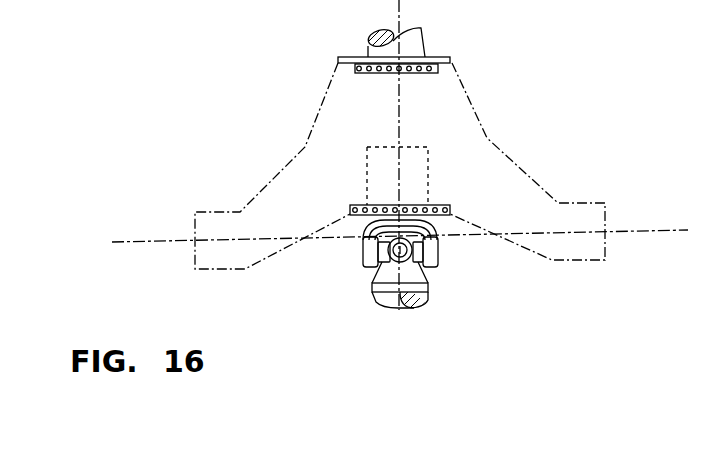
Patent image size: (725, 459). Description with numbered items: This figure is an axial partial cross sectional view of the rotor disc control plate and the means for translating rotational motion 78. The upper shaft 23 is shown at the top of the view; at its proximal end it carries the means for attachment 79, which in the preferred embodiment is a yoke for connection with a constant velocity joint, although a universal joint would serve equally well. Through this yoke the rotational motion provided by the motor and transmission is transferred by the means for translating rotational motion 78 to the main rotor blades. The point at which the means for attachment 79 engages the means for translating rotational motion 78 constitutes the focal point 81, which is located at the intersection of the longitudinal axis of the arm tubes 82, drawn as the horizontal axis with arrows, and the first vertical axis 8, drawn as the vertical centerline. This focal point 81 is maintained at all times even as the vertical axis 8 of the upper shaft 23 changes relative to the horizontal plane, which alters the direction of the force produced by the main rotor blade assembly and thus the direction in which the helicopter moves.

The first vertical axis 8 is at (400, 310).
The upper shaft 23 is at (417, 48).
The means for translating rotational motion 78 is at (352, 215).
The means for attachment 79 is at (438, 250).
The focal point 81 is at (420, 236).
The arm tubes 82 is at (397, 237).